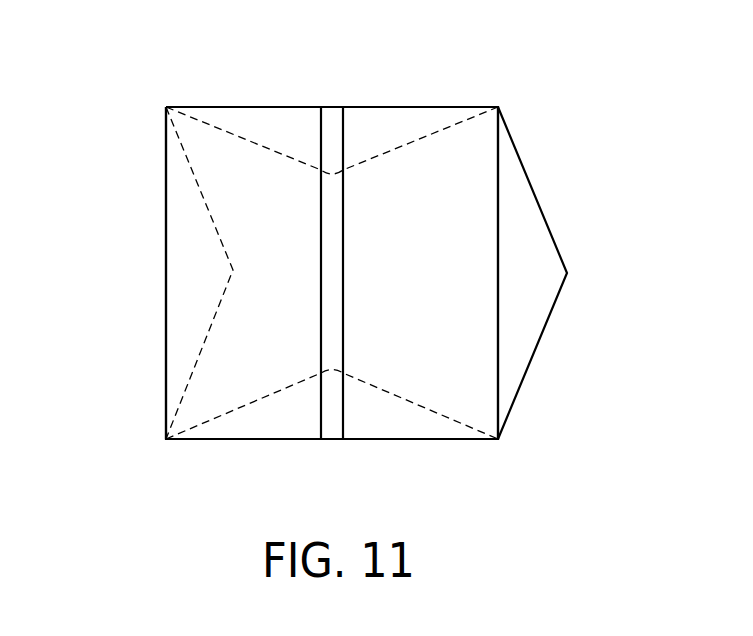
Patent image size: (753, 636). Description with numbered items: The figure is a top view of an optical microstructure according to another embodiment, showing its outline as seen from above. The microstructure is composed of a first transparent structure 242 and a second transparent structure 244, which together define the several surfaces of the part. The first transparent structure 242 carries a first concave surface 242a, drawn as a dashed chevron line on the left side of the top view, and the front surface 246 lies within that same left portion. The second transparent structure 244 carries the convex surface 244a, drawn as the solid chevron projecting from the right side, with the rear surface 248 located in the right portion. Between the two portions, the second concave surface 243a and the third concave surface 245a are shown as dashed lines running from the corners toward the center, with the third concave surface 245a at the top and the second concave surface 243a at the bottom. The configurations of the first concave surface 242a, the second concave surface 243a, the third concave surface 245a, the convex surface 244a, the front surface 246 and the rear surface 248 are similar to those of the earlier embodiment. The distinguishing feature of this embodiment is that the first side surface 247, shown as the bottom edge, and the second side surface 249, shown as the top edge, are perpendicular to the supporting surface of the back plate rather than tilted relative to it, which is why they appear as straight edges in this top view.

The first panel 242 is at (165, 362).
The first concave surface 242a is at (198, 185).
The second concave surface 243a is at (410, 405).
The second panel 244 is at (499, 352).
The convex surface 244a is at (536, 193).
The third concave surface 245a is at (411, 141).
The front surface 246 is at (273, 273).
The first side surface 247 is at (250, 441).
The rear surface 248 is at (447, 273).
The second side surface 249 is at (248, 105).